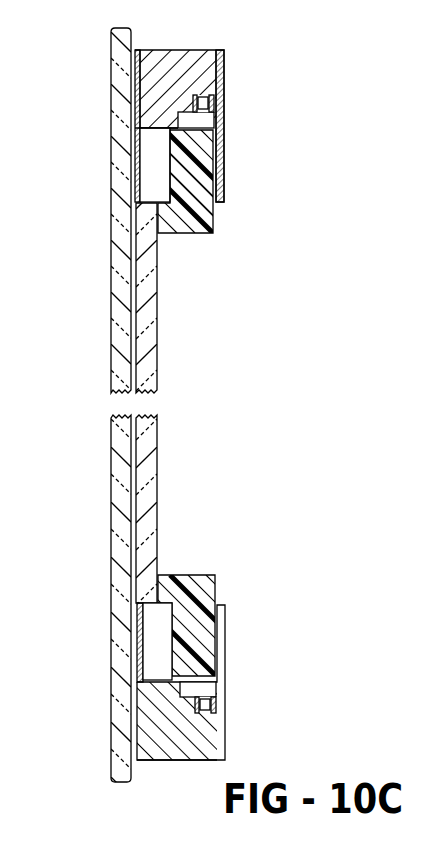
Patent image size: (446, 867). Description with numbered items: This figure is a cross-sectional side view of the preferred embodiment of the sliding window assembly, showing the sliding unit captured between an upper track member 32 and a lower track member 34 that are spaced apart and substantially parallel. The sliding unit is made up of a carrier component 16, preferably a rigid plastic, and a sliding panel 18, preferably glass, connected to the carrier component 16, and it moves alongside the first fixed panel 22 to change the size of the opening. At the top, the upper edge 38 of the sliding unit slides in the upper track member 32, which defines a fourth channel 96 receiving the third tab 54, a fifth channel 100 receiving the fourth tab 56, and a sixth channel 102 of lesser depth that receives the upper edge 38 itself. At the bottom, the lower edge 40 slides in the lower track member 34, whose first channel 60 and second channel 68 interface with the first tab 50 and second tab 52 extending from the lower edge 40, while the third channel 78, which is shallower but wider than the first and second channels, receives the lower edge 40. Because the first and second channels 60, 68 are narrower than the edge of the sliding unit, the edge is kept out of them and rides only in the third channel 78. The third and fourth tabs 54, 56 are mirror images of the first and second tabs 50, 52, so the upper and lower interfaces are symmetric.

The carrier component 16 is at (214, 221).
The sliding panel 18 is at (157, 325).
The first fixed panel 22 is at (111, 282).
The upper track member 32 is at (225, 66).
The lower track member 34 is at (226, 750).
The upper edge 38 is at (140, 125).
The lower edge 40 is at (158, 690).
The first tab 50 is at (214, 707).
The second tab 52 is at (214, 686).
The third tab 54 is at (205, 103).
The fourth tab 56 is at (210, 121).
The first channel 60 is at (207, 750).
The second channel 68 is at (176, 757).
The third channel 78 is at (158, 647).
The fourth channel 96 is at (213, 58).
The fifth channel 100 is at (158, 130).
The sixth channel 102 is at (148, 132).